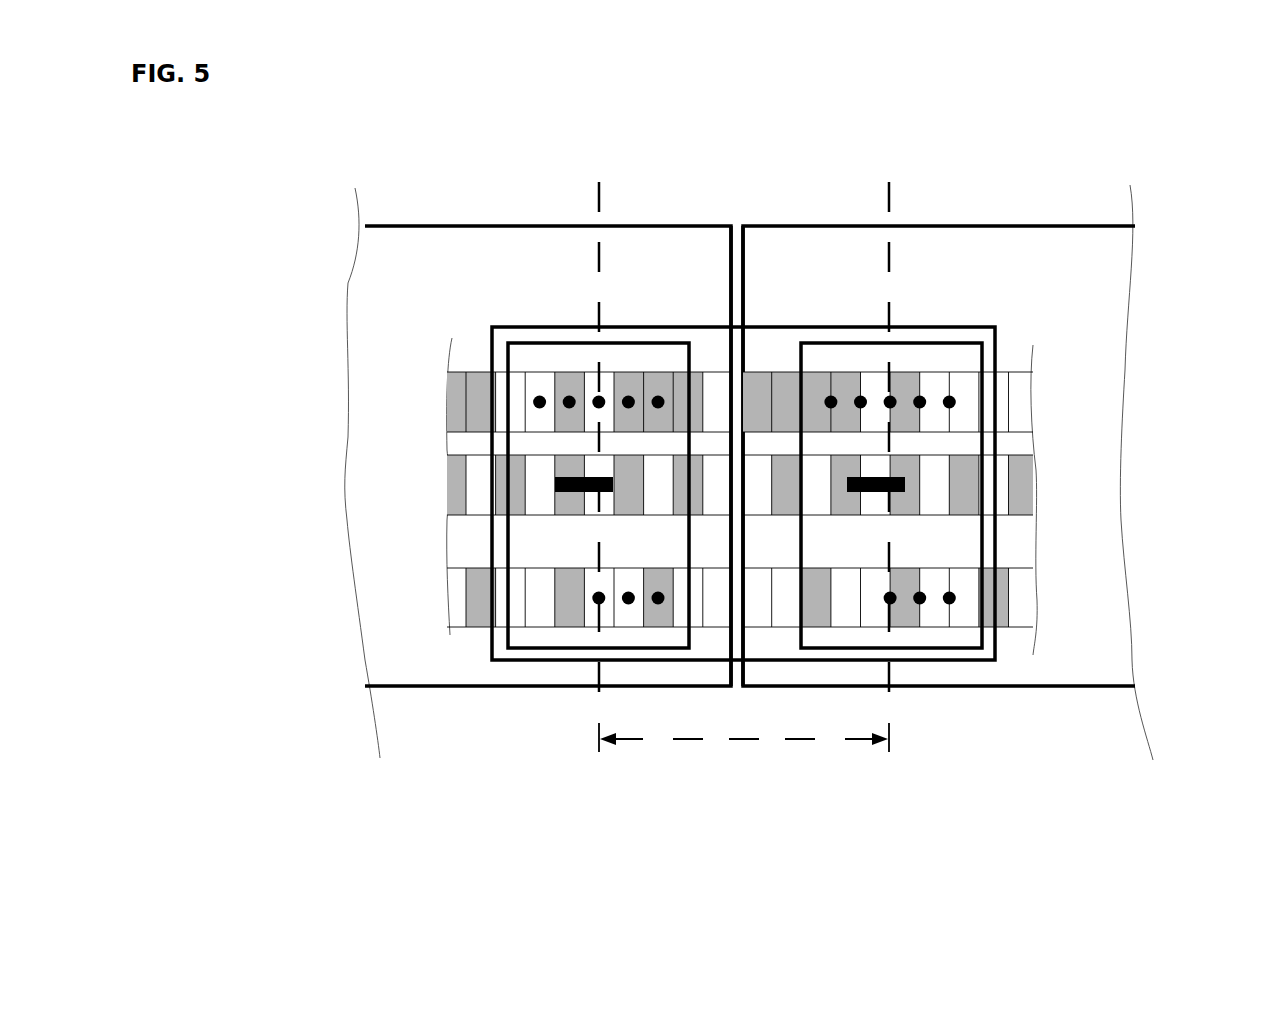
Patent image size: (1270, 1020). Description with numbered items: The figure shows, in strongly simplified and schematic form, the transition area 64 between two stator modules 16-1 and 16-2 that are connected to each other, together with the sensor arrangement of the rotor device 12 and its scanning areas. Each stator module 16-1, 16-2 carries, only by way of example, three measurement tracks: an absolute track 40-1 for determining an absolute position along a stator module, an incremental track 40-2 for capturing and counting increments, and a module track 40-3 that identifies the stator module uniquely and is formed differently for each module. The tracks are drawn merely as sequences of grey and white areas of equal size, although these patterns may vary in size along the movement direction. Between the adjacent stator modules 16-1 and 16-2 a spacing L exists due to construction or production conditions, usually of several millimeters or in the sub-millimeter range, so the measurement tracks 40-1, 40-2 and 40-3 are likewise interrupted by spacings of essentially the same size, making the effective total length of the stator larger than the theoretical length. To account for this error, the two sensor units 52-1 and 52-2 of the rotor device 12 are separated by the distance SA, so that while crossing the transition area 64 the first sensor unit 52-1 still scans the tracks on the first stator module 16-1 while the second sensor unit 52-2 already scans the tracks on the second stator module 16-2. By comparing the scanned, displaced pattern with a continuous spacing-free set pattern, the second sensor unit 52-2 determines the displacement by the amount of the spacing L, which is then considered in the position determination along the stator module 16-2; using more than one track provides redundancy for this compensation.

The rotor device 12 is at (893, 327).
The first stator module 16-1 is at (512, 224).
The second stator module 16-2 is at (945, 224).
The transition area 64 is at (747, 198).
The spacing L is at (737, 250).
The absolute track 40-1 is at (1020, 403).
The incremental track 40-2 is at (1020, 483).
The module track 40-3 is at (1020, 597).
The first sensor unit 52-1 is at (547, 648).
The second sensor unit 52-2 is at (953, 648).
The distance SA is at (744, 753).